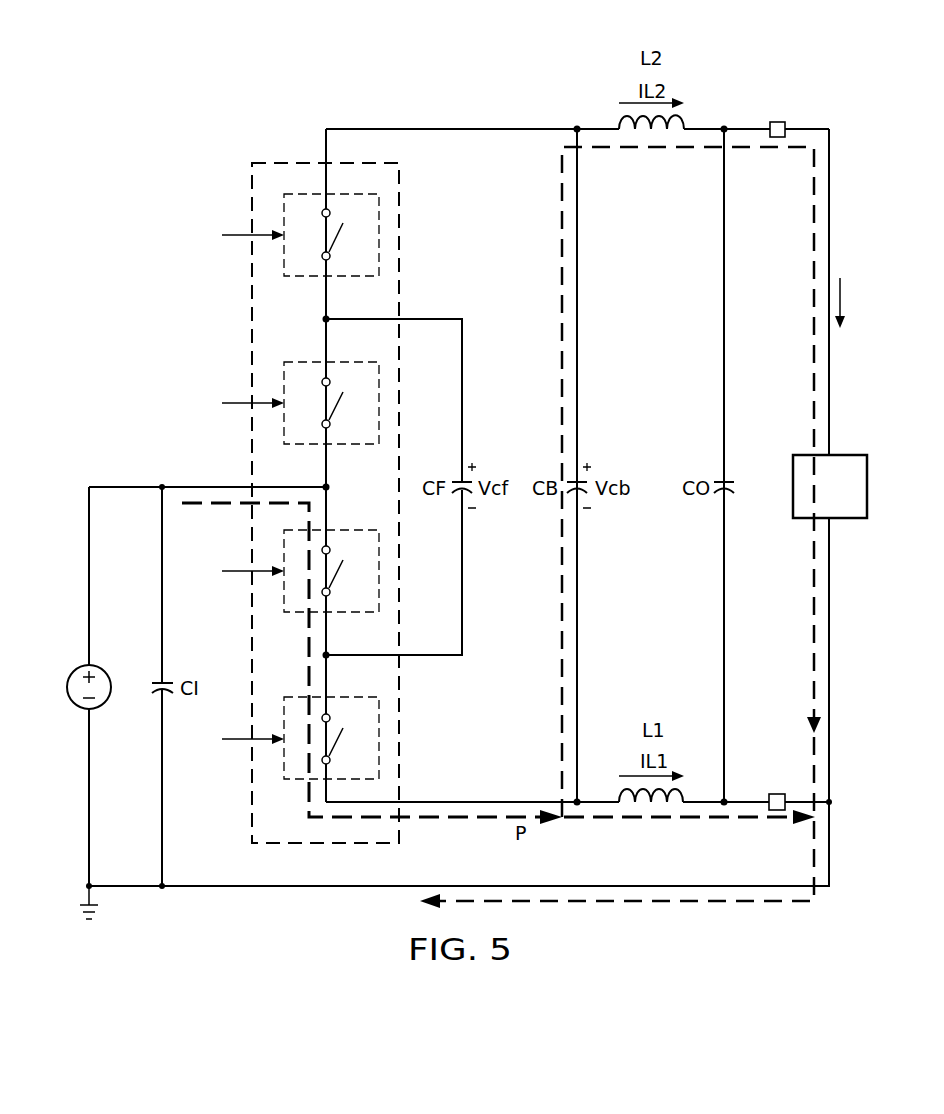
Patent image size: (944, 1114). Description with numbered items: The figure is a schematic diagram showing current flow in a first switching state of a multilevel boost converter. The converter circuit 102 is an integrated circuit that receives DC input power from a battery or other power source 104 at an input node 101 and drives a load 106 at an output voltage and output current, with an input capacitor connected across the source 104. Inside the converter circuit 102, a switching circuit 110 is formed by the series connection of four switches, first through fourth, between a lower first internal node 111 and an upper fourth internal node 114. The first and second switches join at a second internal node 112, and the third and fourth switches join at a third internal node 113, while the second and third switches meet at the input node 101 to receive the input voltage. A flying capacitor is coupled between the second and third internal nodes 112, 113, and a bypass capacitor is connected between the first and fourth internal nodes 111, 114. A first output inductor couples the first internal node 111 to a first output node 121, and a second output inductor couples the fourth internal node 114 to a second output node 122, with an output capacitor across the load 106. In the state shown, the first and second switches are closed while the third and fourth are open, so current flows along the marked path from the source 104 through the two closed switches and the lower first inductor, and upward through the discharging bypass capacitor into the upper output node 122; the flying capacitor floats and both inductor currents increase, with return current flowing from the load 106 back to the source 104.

The input node 101 is at (205, 487).
The converter circuit 102 is at (201, 49).
The power source 104 is at (58, 650).
The load 106 is at (851, 453).
The switching circuit 110 is at (282, 147).
The first internal node 111 is at (478, 802).
The second internal node 112 is at (430, 656).
The third internal node 113 is at (430, 317).
The fourth internal node 114 is at (467, 129).
The first output node 121 is at (690, 793).
The second output node 122 is at (703, 128).